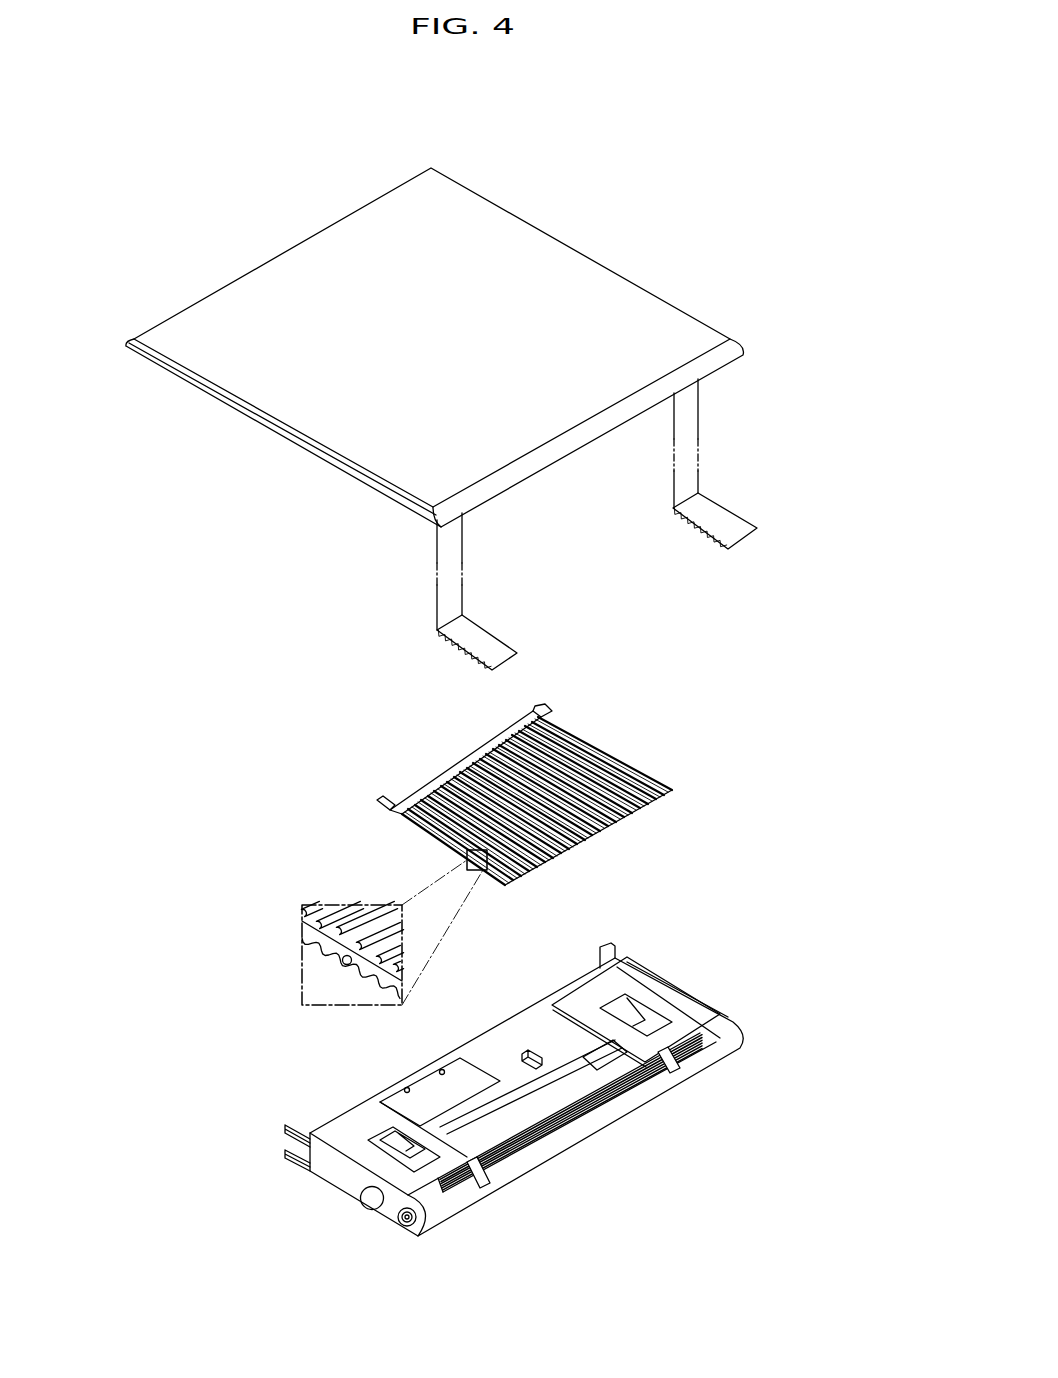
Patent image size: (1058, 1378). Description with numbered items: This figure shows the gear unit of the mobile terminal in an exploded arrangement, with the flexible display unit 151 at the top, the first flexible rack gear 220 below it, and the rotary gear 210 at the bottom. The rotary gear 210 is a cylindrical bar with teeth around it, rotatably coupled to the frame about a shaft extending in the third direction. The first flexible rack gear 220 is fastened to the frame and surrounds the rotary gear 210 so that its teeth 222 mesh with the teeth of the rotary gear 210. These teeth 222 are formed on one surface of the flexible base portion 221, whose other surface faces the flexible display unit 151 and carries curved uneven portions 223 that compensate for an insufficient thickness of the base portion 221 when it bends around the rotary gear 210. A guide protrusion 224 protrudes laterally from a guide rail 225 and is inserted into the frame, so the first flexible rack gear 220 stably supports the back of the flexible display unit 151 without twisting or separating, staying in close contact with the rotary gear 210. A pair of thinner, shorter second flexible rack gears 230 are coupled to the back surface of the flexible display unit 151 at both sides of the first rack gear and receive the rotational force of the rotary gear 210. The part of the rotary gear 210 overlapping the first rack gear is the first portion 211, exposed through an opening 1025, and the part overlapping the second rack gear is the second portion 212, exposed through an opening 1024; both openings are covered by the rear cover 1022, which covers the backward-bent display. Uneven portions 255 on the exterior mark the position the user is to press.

The flexible display unit 151 is at (564, 272).
The second flexible rack gear 230 is at (470, 641).
The first flexible rack gear 220 is at (597, 757).
The flexible base portion 221 is at (308, 932).
The teeth 222 is at (320, 957).
The curved uneven portions 223 is at (307, 917).
The guide protrusion 224 is at (345, 962).
The rotary gear 210 is at (760, 1137).
The first portion 211 is at (655, 1087).
The second portion 212 is at (697, 1065).
The guide rail 225 is at (628, 1050).
The rear cover 1022 is at (488, 1187).
The opening 1024 is at (588, 982).
The opening 1025 is at (543, 1100).
The uneven portions 255 is at (373, 1203).